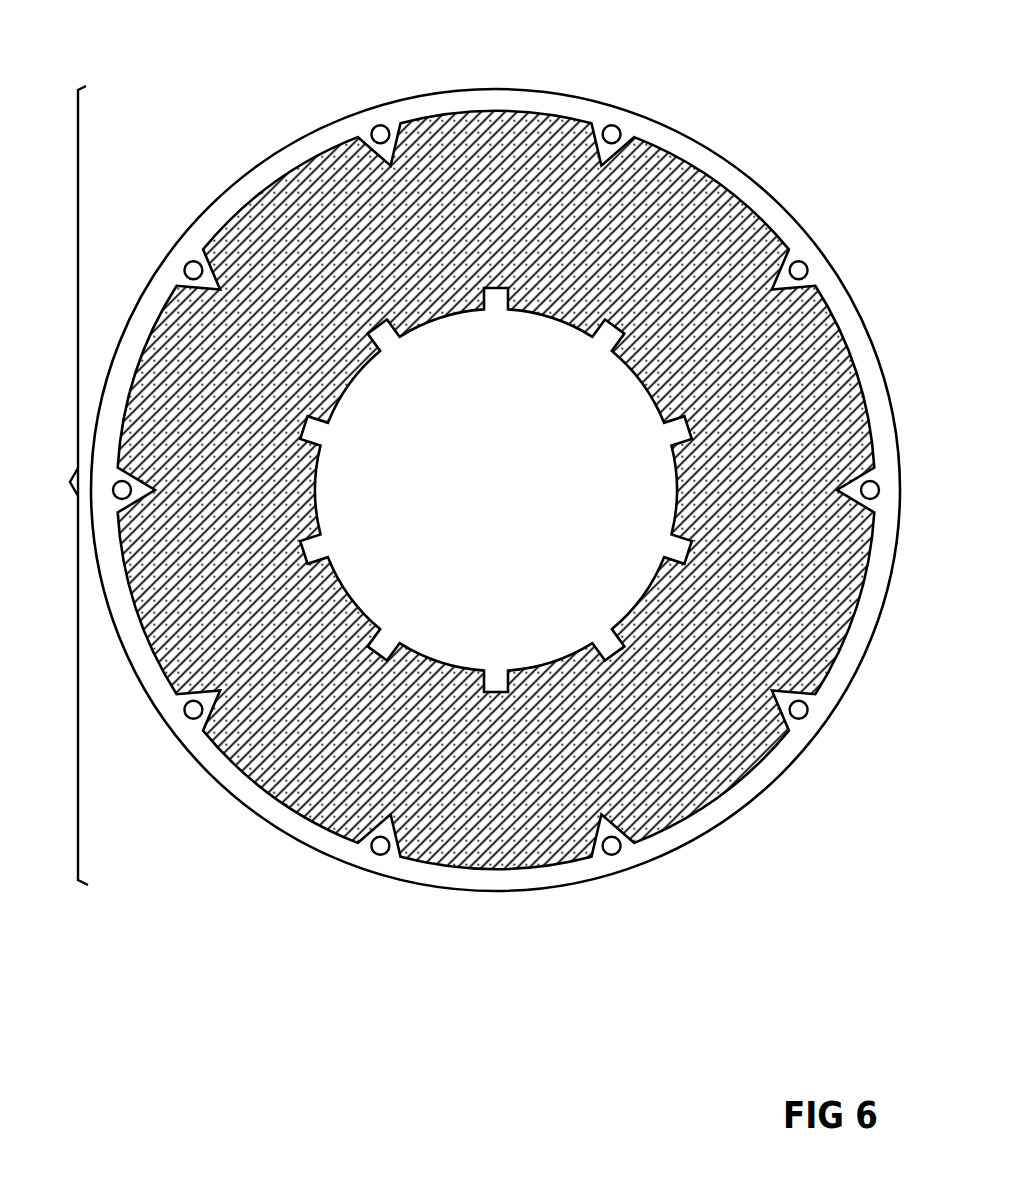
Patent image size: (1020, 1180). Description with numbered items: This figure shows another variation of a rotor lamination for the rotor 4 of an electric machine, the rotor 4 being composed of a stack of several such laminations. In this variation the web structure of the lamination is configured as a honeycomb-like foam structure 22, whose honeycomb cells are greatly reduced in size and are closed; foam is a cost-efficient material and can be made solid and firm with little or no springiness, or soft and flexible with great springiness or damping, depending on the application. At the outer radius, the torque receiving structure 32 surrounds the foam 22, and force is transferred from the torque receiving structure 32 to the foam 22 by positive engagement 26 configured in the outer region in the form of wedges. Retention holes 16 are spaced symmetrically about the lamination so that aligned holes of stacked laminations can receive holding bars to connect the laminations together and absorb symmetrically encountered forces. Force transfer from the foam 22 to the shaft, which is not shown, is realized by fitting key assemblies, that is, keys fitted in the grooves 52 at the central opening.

The rotor 4 is at (67, 485).
The retention holes 16 is at (366, 119).
The honeycomb-like foam structure 22 is at (650, 200).
The positive engagement 26 is at (786, 284).
The torque receiving structure 32 is at (253, 163).
The grooves 52 is at (601, 640).